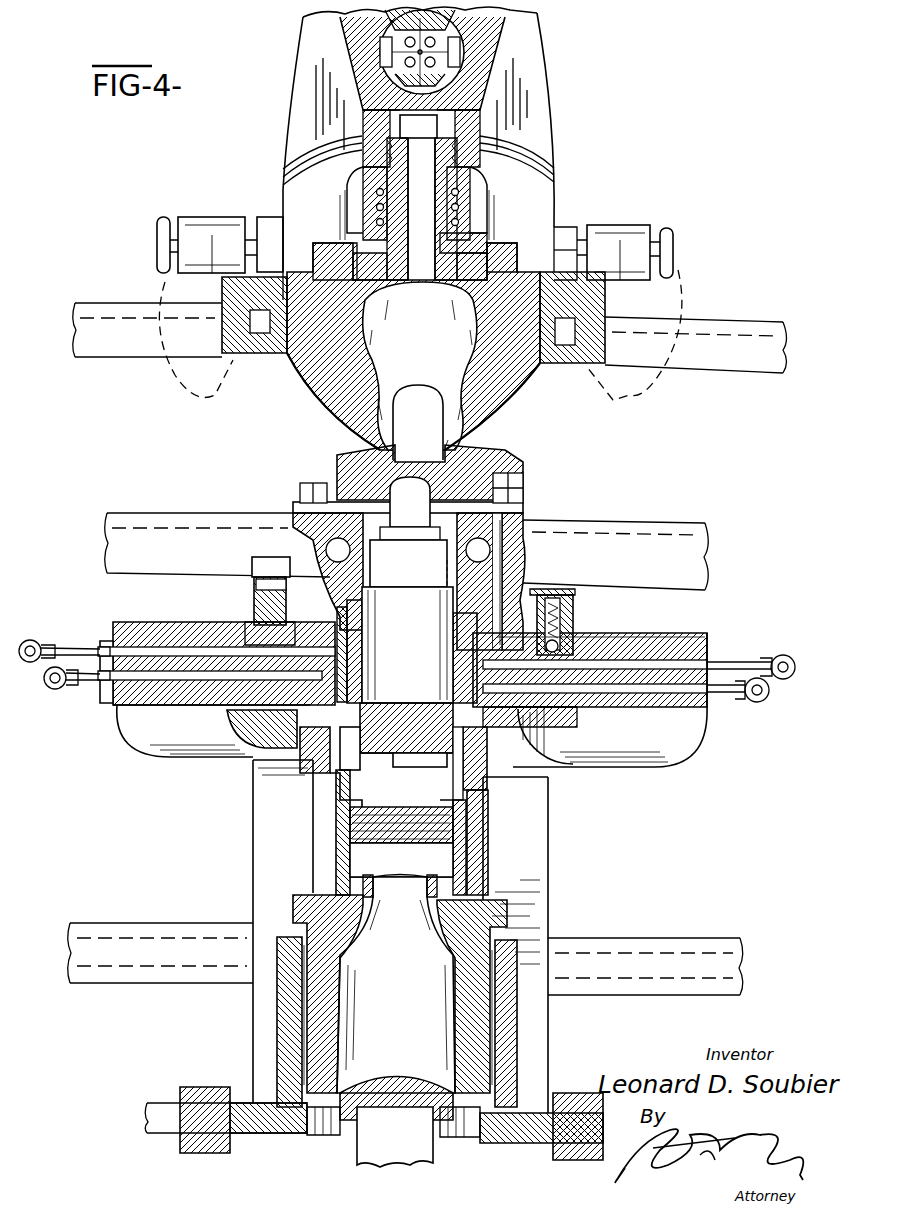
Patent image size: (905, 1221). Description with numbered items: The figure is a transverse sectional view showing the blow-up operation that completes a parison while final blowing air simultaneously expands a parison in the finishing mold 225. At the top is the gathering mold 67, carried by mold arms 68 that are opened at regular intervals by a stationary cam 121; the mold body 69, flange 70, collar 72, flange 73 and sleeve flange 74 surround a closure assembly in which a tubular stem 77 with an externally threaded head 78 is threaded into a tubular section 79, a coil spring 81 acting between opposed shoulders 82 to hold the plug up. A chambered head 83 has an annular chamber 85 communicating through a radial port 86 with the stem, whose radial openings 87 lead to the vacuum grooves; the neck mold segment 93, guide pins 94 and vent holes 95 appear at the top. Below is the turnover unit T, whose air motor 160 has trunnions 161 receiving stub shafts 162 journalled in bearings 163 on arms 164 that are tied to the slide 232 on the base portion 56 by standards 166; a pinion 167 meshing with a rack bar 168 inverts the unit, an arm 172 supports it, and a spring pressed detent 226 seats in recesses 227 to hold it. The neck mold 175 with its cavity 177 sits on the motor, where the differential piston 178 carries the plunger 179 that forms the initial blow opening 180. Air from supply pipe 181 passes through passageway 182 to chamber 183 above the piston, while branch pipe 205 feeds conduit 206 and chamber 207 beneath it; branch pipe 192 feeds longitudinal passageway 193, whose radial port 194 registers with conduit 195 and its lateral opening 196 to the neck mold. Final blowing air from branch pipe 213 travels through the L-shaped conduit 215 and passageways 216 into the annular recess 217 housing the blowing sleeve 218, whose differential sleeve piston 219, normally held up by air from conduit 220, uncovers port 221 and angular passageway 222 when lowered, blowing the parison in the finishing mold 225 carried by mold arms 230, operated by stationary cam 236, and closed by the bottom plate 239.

The base portion 56 is at (158, 1135).
The gathering mold 67 is at (685, 293).
The mold arms 68 is at (546, 158).
The mold skirt 69 is at (541, 73).
The mold flange 70 is at (560, 368).
The collar 72 is at (516, 268).
The collar flange 73 is at (517, 250).
The sleeve flange 74 is at (330, 256).
The tubular stem 77 is at (470, 195).
The externally threaded head 78 is at (470, 240).
The tubular section 79 is at (365, 207).
The coil spring 81 is at (364, 192).
The shoulders 82 is at (487, 183).
The head 83 is at (500, 50).
The annular chamber 85 is at (414, 109).
The radial port 86 is at (430, 136).
The radial openings 87 is at (420, 195).
The neck mold segment 93 is at (398, 72).
The guide pin 94 is at (380, 50).
The vent holes 95 is at (440, 52).
The stationary cam 121 is at (696, 368).
The air motor 160 is at (533, 541).
The trunnions 161 is at (248, 622).
The stub shafts 162 is at (180, 622).
The bearings 163 is at (115, 708).
The arms 164 is at (180, 758).
The standards 166 is at (540, 868).
The pinion 167 is at (255, 603).
The rack bar 168 is at (252, 565).
The arm 172 is at (645, 522).
The neck mold 175 is at (490, 458).
The neck mold cavity 177 is at (350, 453).
The differential piston 178 is at (375, 685).
The plunger 179 is at (420, 515).
The initial blow opening 180 is at (426, 440).
The supply pipe 181 is at (44, 642).
The passageway 182 is at (128, 630).
The chamber 183 is at (334, 622).
The branch pipe 192 is at (740, 660).
The longitudinal passageway 193 is at (713, 640).
The radial port 194 is at (445, 632).
The conduit 195 is at (500, 575).
The lateral opening 196 is at (522, 510).
The branch pipe 205 is at (50, 688).
The conduit 206 is at (200, 690).
The chamber 207 is at (302, 776).
The branch pipe 213 is at (766, 700).
The longitudinal conduit 215 is at (620, 700).
The passageways 216 is at (487, 755).
The annular recess 217 is at (320, 800).
The blowing sleeve 218 is at (335, 858).
The differential sleeve piston 219 is at (398, 800).
The conduit 220 is at (445, 647).
The port 221 is at (489, 768).
The angular passageway 222 is at (400, 780).
The finishing mold 225 is at (425, 955).
The spring pressed detent 226 is at (600, 640).
The recesses 227 is at (548, 725).
The mold arms 230 is at (505, 1031).
The slide 232 is at (496, 1143).
The stationary cam 236 is at (660, 947).
The bottom plate 239 is at (345, 1137).
The turnover unit T is at (217, 545).